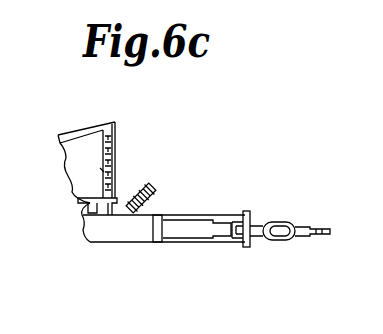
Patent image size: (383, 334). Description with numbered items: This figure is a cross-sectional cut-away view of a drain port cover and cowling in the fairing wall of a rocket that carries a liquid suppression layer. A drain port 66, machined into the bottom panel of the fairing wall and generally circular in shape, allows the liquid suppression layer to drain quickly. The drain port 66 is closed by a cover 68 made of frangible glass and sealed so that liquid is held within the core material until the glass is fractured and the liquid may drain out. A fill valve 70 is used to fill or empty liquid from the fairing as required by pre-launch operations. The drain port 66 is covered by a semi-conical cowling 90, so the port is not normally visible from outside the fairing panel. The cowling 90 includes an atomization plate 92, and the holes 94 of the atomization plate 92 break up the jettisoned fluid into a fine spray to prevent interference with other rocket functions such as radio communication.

The drain port 66 is at (115, 245).
The cover 68 is at (98, 243).
The fill valve 70 is at (160, 186).
The semi-conical cowling 90 is at (90, 124).
The atomization plate 92 is at (114, 134).
The holes 94 is at (103, 168).